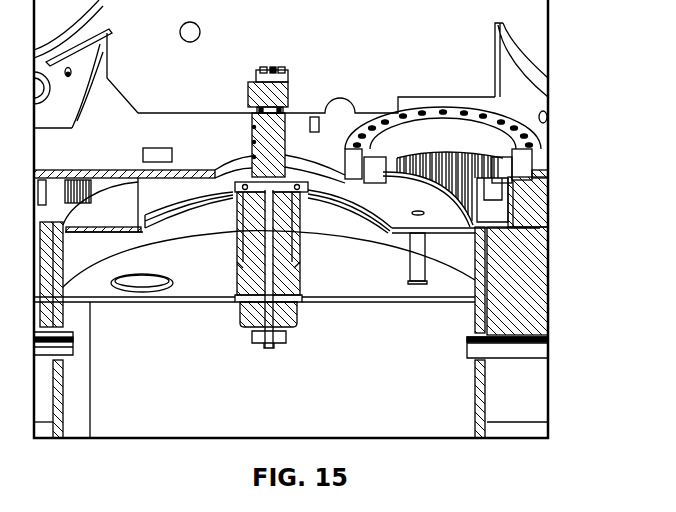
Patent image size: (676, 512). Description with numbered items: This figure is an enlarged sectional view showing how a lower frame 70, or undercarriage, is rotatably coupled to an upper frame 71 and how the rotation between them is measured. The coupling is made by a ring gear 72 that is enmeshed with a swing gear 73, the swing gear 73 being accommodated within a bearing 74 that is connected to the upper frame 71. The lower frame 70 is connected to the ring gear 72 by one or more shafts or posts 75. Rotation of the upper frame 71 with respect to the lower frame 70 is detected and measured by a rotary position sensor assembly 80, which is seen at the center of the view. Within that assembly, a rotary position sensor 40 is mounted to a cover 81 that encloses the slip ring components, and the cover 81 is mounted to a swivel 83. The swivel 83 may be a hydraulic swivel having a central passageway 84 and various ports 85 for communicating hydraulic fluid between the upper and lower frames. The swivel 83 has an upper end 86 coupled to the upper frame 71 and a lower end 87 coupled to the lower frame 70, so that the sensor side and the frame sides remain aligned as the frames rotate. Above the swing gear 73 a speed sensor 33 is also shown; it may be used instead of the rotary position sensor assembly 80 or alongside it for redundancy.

The speed sensor 33 is at (446, 148).
The rotary position sensor 40 is at (272, 72).
The lower frame 70 is at (538, 397).
The upper frame 71 is at (115, 98).
The ring gear 72 is at (117, 200).
The swing gear 73 is at (505, 177).
The bearing 74 is at (552, 168).
The shafts or posts 75 is at (415, 280).
The rotary position sensor assembly 80 is at (216, 218).
The cover 81 is at (288, 82).
The swivel 83 is at (230, 256).
The central passageway 84 is at (268, 263).
The ports 85 is at (263, 345).
The upper end 86 is at (253, 127).
The lower end 87 is at (292, 233).